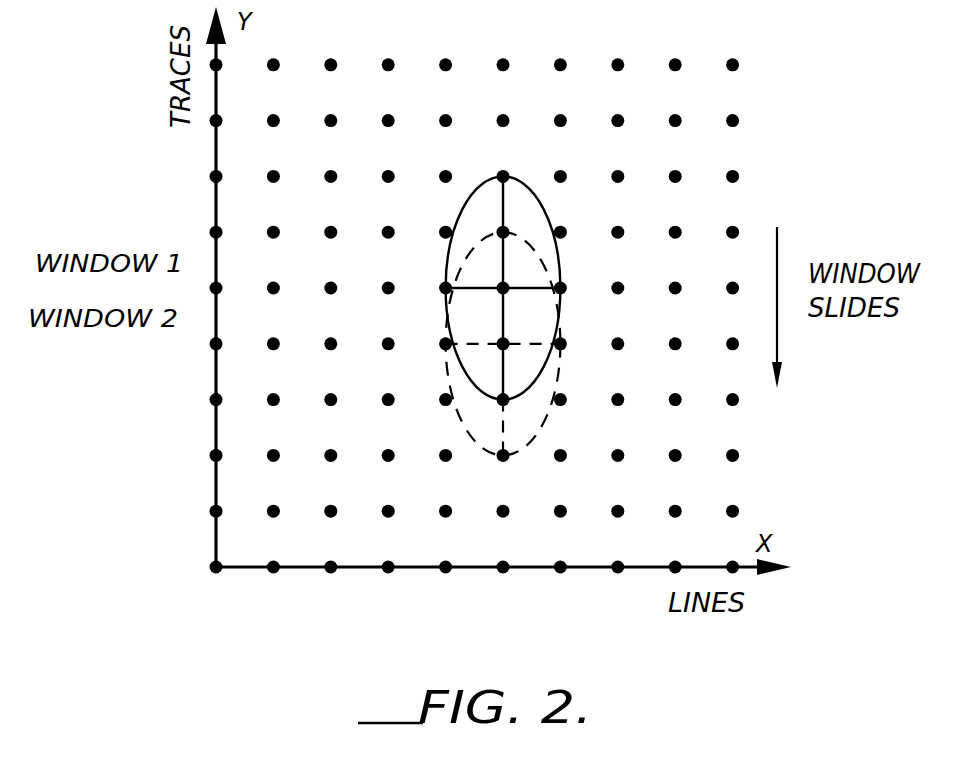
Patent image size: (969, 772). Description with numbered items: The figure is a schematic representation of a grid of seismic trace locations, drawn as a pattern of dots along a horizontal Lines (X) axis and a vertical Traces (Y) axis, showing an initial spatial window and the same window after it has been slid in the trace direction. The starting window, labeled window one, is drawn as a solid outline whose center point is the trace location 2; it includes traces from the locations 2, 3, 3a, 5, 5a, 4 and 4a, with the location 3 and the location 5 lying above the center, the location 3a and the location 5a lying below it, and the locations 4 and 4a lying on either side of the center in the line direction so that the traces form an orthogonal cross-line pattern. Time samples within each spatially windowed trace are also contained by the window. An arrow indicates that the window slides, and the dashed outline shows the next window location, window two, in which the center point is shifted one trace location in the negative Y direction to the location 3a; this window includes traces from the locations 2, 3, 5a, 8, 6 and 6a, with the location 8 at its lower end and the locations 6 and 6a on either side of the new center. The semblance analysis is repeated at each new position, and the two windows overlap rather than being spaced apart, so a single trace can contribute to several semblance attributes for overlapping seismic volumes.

The trace location 2 is at (512, 301).
The trace location 3 is at (512, 225).
The trace location 3a is at (517, 356).
The trace location 4 is at (436, 295).
The trace location 4a is at (577, 292).
The trace location 5 is at (512, 165).
The trace location 5a is at (517, 411).
The trace location 6 is at (436, 344).
The trace location 6a is at (576, 346).
The trace location 8 is at (508, 467).